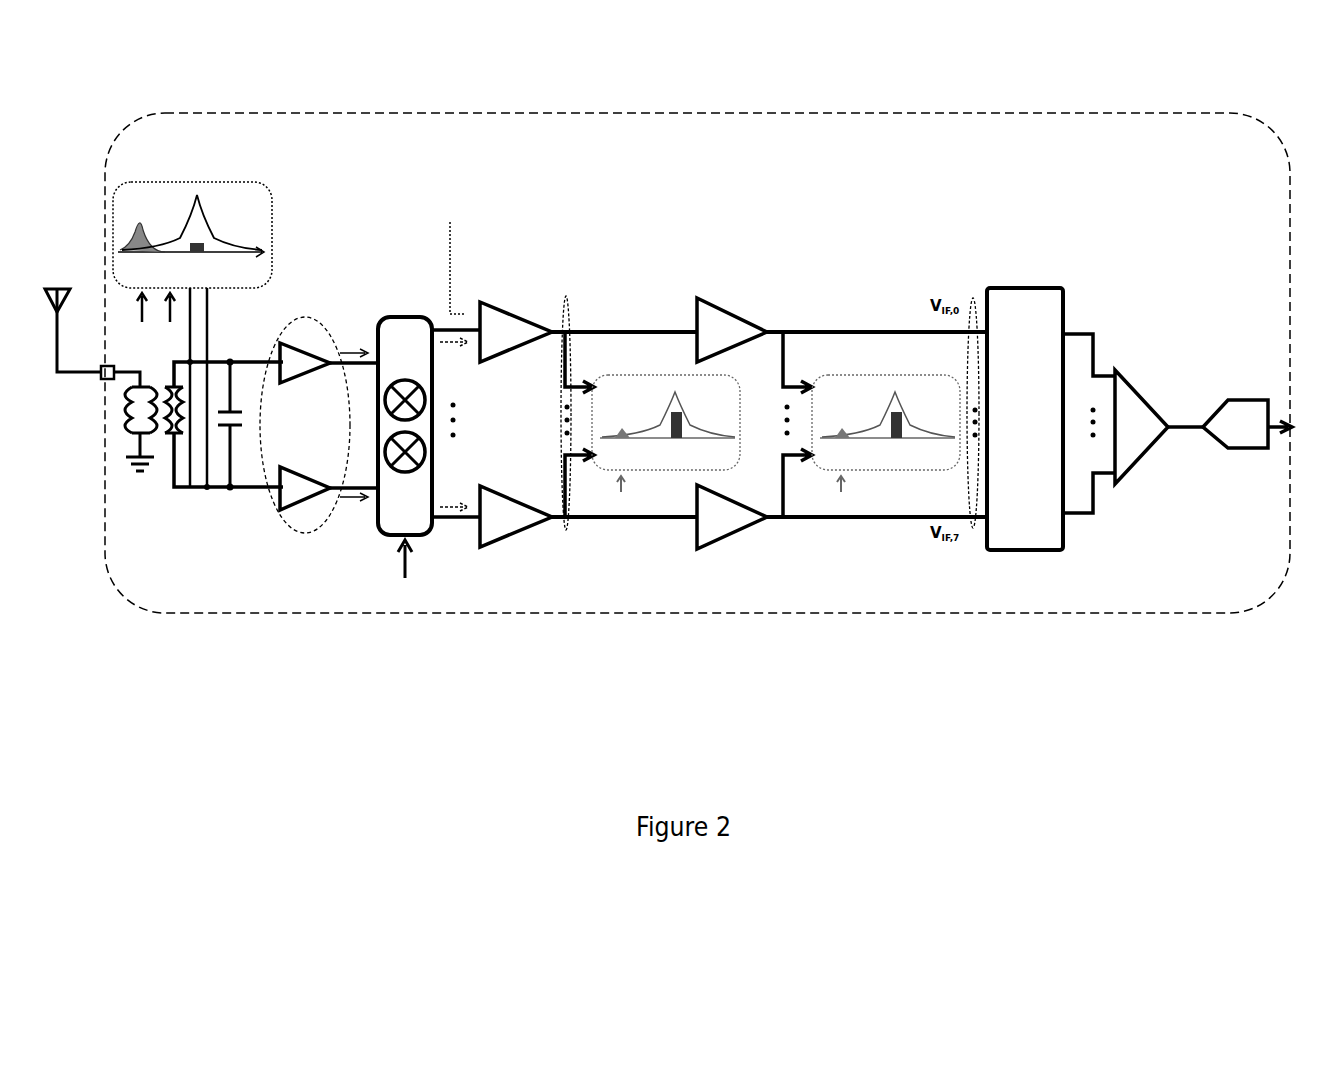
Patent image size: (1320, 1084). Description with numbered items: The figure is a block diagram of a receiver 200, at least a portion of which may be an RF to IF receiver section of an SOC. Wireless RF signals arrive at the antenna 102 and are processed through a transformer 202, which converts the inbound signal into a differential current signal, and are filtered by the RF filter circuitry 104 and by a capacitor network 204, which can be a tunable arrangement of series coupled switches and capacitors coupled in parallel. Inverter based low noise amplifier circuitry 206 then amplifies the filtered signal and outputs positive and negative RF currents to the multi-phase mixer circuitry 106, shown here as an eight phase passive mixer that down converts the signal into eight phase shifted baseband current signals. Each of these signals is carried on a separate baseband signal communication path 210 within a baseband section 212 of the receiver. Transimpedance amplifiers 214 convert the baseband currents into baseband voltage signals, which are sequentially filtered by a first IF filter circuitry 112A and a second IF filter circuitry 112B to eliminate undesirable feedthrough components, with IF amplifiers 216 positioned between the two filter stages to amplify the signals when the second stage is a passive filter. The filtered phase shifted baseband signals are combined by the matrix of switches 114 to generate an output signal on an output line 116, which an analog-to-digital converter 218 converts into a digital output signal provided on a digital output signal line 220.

The receiver 200 is at (578, 113).
The antenna 102 is at (57, 288).
The RF filter circuitry 104 is at (272, 238).
The multi-phase mixer circuitry 106 is at (412, 222).
The transformer 202 is at (128, 435).
The capacitor network 204 is at (244, 430).
The low noise amplifier circuitry 206 is at (278, 347).
The transimpedance amplifiers 214 is at (512, 308).
The baseband signal communication paths 210 is at (566, 300).
The first IF filter circuitry 112A is at (665, 470).
The second IF filter circuitry 112B is at (920, 470).
The IF amplifiers 216 is at (745, 305).
The matrix of switches 114 is at (1044, 256).
The output line 116 is at (1192, 432).
The analog-to-digital converter 218 is at (1242, 398).
The digital output signal line 220 is at (1290, 435).
The baseband section 212 is at (722, 610).